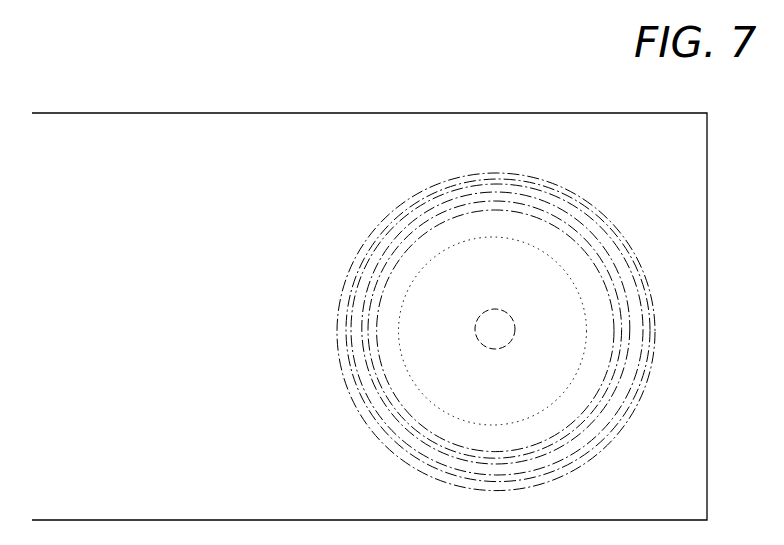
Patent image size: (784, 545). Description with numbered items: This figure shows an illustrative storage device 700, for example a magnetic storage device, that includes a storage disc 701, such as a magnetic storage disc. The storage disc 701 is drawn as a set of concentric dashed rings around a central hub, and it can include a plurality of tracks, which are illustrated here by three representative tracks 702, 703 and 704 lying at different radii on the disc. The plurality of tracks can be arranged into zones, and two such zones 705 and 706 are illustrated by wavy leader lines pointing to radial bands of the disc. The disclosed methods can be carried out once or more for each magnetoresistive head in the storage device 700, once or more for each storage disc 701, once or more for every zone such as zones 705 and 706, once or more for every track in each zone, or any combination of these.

The storage device 700 is at (162, 162).
The storage disc 701 is at (373, 198).
The track 702 is at (542, 203).
The track 703 is at (553, 203).
The track 704 is at (588, 214).
The zone 705 is at (375, 302).
The zone 706 is at (400, 330).